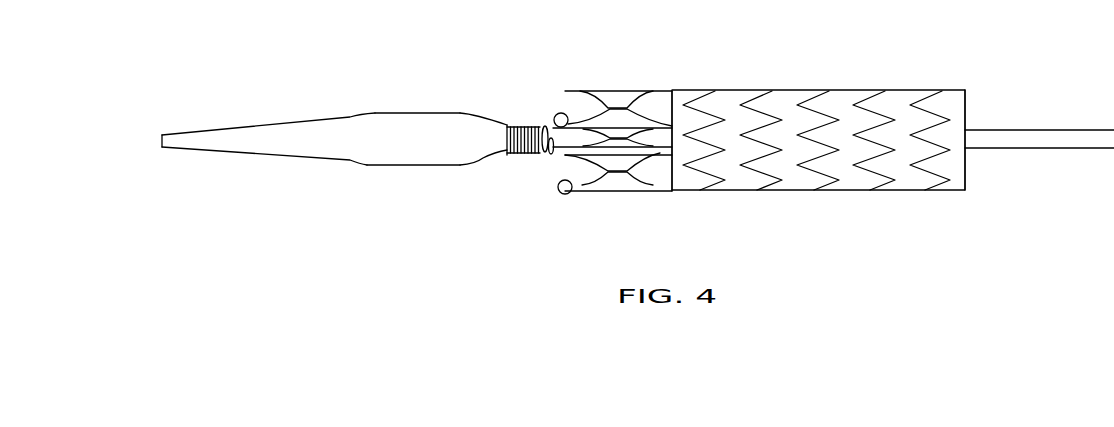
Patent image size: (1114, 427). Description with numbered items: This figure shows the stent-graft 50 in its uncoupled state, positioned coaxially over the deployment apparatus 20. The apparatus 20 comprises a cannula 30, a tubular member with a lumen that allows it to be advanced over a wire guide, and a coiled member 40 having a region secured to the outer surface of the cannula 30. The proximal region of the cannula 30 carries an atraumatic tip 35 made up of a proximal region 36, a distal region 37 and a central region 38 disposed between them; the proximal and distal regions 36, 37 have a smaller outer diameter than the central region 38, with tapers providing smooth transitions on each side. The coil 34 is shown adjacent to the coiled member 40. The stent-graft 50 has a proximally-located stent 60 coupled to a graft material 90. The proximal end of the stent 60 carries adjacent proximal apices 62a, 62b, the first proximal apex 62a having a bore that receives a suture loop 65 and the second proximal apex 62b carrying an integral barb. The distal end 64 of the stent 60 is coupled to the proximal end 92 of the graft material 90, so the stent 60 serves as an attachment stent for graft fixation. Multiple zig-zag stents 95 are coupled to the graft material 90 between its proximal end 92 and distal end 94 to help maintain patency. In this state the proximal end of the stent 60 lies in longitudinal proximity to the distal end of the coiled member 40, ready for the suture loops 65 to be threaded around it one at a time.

The apparatus 20 is at (333, 138).
The cannula 30 is at (1090, 150).
The coil 34 is at (514, 126).
The atraumatic tip 35 is at (348, 140).
The proximal region 36 is at (177, 141).
The distal region 37 is at (473, 163).
The central region 38 is at (408, 167).
The coiled member 40 is at (530, 125).
The stent-graft 50 is at (819, 138).
The stent 60 is at (597, 132).
The first proximal apex 62a is at (569, 193).
The second proximal apex 62b is at (567, 155).
The distal end 64 is at (665, 90).
The suture loop 65 is at (563, 113).
The graft material 90 is at (819, 141).
The proximal end 92 is at (682, 182).
The distal end 94 is at (955, 180).
The zig-zag stents 95 is at (862, 170).